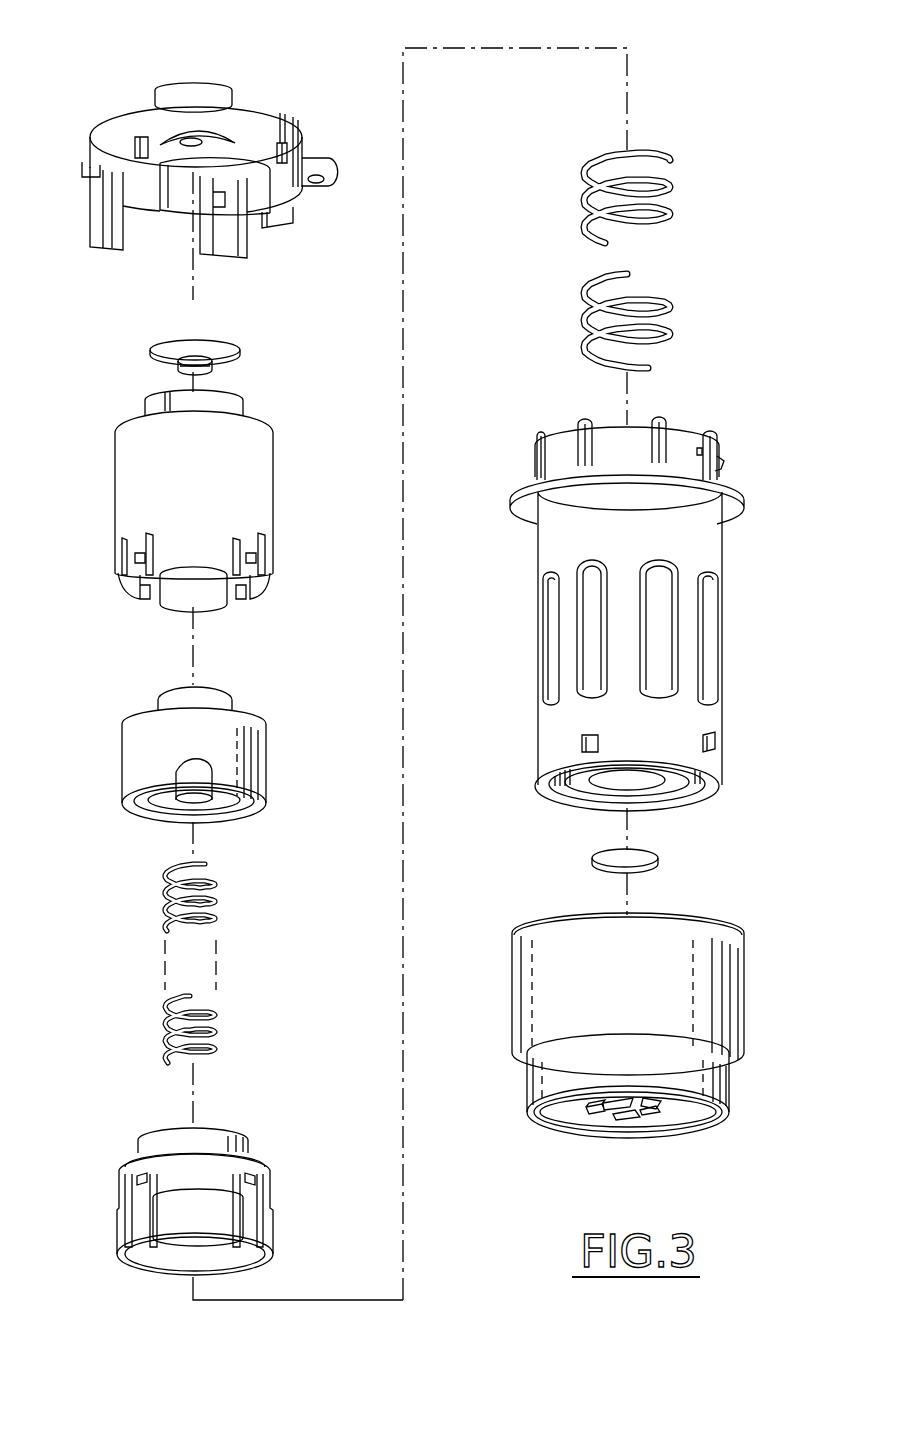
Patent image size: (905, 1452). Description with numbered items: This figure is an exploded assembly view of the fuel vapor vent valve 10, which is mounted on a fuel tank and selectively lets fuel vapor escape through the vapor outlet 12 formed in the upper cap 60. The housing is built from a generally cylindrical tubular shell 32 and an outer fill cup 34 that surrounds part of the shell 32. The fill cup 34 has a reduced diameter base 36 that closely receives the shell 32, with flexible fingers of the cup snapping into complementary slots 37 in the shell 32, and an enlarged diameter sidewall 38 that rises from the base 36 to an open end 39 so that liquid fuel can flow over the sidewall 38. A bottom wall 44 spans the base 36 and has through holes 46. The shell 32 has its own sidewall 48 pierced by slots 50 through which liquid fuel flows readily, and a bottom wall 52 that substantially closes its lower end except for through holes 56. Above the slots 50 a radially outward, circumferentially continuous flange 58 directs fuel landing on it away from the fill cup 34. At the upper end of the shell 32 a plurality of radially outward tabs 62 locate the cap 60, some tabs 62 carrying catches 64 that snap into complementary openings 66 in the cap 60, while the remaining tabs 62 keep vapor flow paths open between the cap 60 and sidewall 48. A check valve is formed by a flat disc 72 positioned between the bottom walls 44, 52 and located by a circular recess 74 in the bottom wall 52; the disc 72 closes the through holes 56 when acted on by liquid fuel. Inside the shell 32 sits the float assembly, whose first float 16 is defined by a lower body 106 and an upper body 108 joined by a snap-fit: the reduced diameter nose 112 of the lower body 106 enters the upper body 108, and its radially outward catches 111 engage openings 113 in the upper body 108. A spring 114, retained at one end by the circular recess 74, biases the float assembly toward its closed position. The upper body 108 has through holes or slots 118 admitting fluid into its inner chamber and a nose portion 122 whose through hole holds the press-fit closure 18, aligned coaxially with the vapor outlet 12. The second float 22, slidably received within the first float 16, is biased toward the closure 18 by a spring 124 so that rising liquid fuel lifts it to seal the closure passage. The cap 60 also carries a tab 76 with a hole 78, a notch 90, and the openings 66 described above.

The fuel vapor vent valve 10 is at (73, 56).
The vapor outlet 12 is at (198, 88).
The first float 16 is at (102, 534).
The closure 18 is at (241, 341).
The second float 22 is at (277, 733).
The shell 32 is at (726, 545).
The fill cup 34 is at (754, 978).
The base 36 is at (716, 1088).
The slots 37 is at (719, 751).
The sidewall 38 is at (521, 985).
The open end 39 is at (707, 917).
The bottom wall 44 is at (700, 1113).
The through holes 46 is at (655, 1118).
The sidewall 48 is at (713, 720).
The slots 50 is at (586, 633).
The bottom wall 52 is at (694, 786).
The through holes 56 is at (612, 792).
The flange 58 is at (737, 502).
The upper cap 60 is at (285, 75).
The tabs 62 is at (711, 434).
The catches 64 is at (722, 466).
The openings 66 is at (142, 136).
The disc 72 is at (659, 864).
The circular recess 74 is at (580, 786).
The tab 76 is at (333, 172).
The hole 78 is at (322, 186).
The notch 90 is at (92, 167).
The lower body 106 is at (271, 1213).
The upper body 108 is at (274, 470).
The catches 111 is at (249, 1176).
The nose 112 is at (259, 1168).
The openings 113 is at (236, 571).
The spring 114 is at (687, 201).
The through holes or slots 118 is at (260, 548).
The nose portion 122 is at (243, 403).
The spring 124 is at (223, 884).